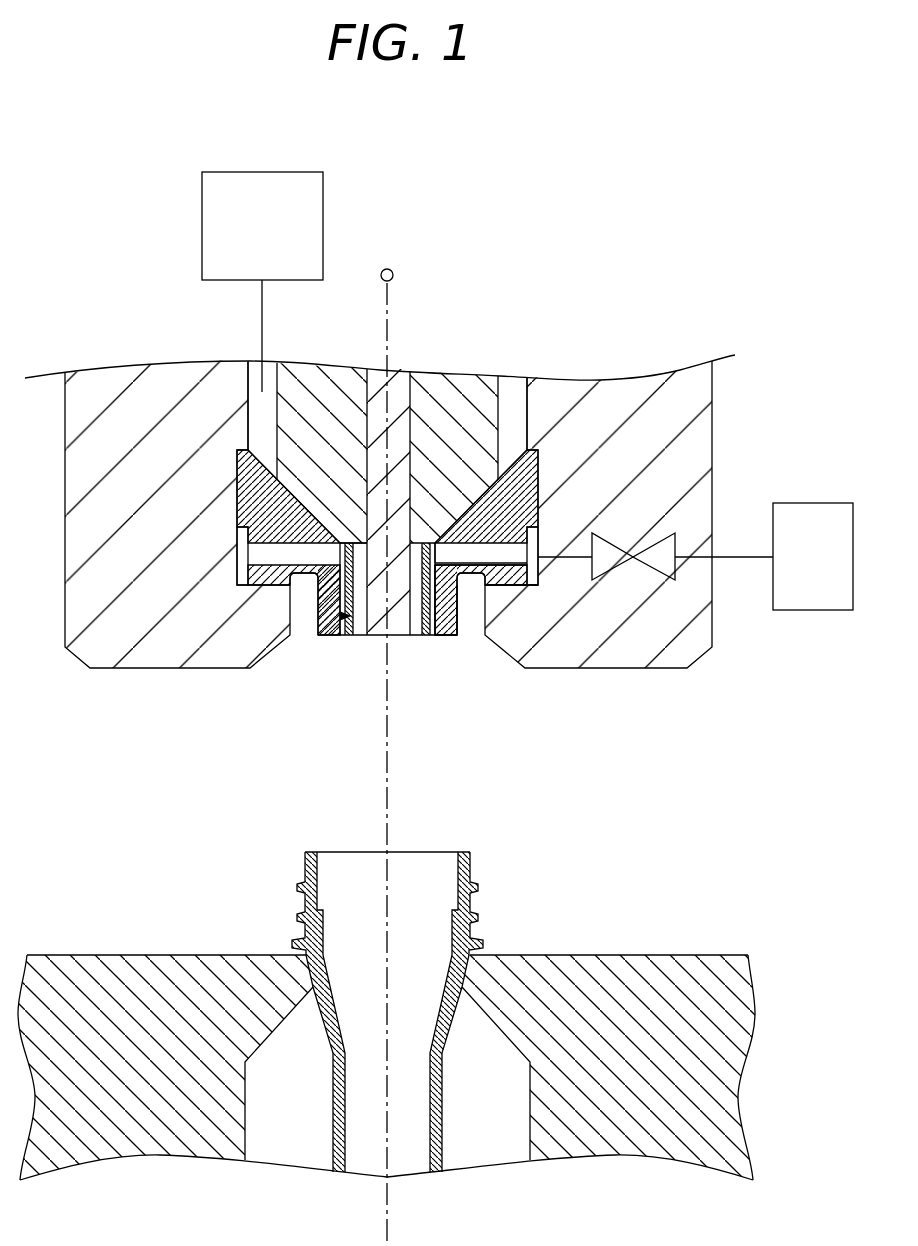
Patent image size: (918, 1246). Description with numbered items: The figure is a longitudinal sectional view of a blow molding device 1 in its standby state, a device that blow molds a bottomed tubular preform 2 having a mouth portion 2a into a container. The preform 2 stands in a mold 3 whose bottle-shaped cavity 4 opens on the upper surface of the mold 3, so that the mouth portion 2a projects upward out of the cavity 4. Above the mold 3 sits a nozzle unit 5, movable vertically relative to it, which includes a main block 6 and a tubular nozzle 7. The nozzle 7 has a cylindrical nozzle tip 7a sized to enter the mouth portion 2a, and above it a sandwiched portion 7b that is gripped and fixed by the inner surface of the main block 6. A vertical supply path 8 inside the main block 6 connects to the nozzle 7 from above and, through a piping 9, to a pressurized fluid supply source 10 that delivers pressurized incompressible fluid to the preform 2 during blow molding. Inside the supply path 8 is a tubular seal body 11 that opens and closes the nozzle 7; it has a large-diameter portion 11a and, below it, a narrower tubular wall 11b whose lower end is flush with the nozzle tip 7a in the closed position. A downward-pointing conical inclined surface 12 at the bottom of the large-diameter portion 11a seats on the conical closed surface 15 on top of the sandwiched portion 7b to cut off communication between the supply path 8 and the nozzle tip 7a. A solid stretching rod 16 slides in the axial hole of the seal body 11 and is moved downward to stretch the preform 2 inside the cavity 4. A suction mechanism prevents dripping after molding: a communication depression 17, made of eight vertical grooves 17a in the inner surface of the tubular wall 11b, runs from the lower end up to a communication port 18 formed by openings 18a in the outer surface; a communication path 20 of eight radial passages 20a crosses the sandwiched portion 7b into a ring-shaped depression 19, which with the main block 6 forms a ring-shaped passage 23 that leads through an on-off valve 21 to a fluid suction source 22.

The blow molding device 1 is at (760, 254).
The preform 2 is at (522, 907).
The mouth portion 2a is at (472, 862).
The mold 3 is at (770, 1074).
The cavity 4 is at (530, 1115).
The nozzle unit 5 is at (735, 430).
The main block 6 is at (690, 462).
The nozzle 7 is at (541, 485).
The nozzle tip 7a is at (454, 615).
The sandwiched portion 7b is at (540, 462).
The supply path 8 is at (262, 422).
The piping 9 is at (262, 325).
The pressurized fluid supply source 10 is at (202, 224).
The seal body 11 is at (505, 406).
The large-diameter portion 11a is at (330, 448).
The tubular wall 11b is at (327, 636).
The inclined surface 12 is at (253, 513).
The closed surface 15 is at (297, 496).
The stretching rod 16 is at (412, 425).
The communication depression 17 is at (387, 653).
The vertical groove 17a is at (406, 615).
The communication port 18 is at (476, 506).
The opening 18a is at (438, 553).
The ring-shaped depression 19 is at (540, 588).
The communication path 20 is at (489, 608).
The radial passage 20a is at (504, 572).
The on-off valve 21 is at (615, 572).
The fluid suction source 22 is at (815, 610).
The ring-shaped passage 23 is at (548, 582).